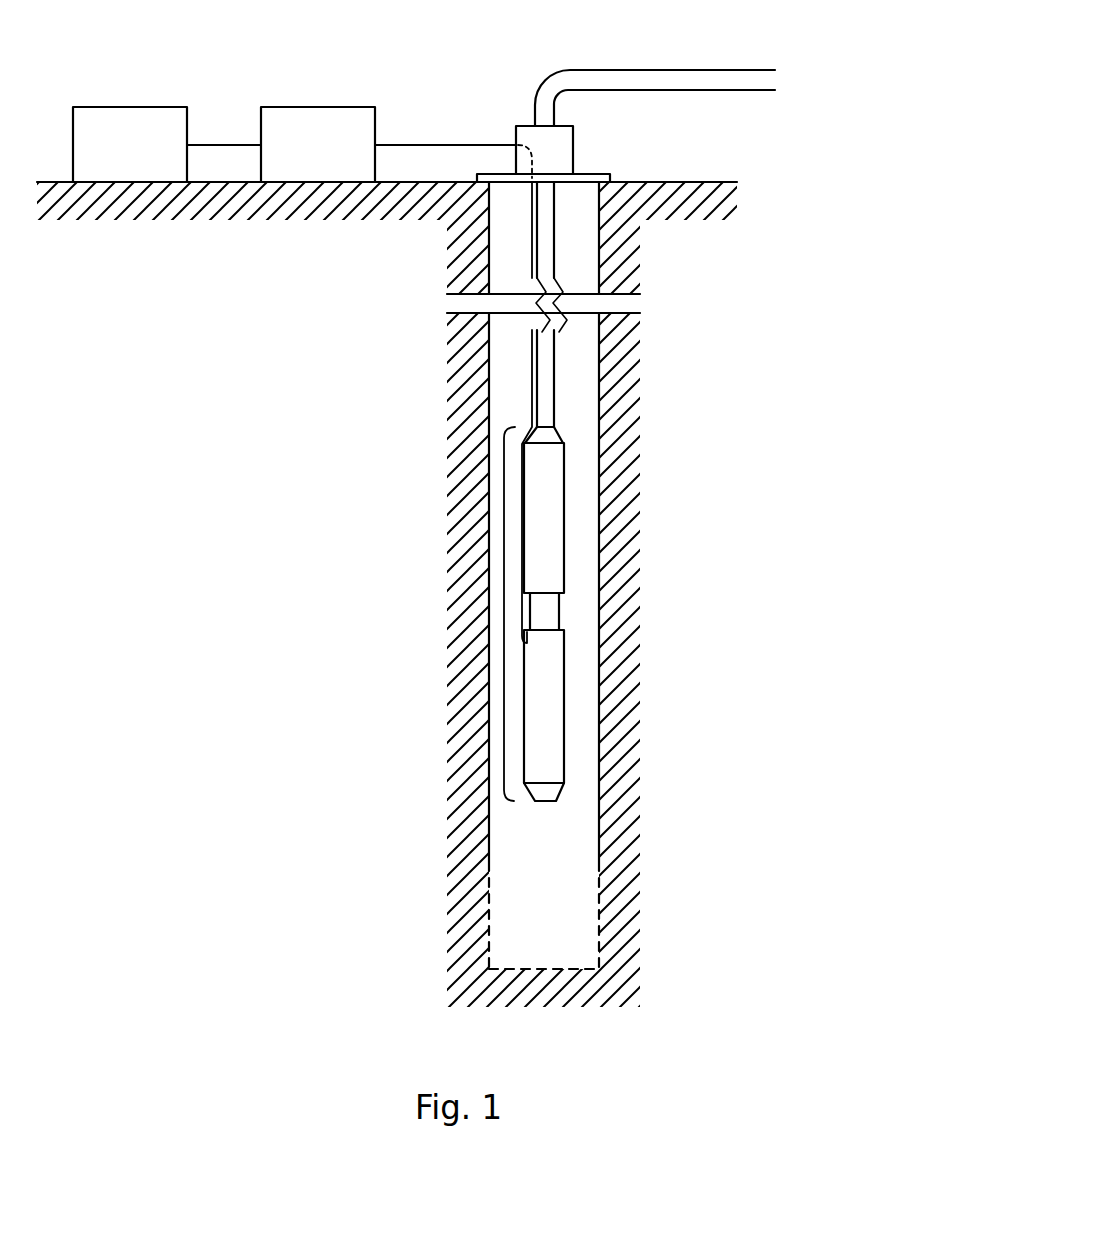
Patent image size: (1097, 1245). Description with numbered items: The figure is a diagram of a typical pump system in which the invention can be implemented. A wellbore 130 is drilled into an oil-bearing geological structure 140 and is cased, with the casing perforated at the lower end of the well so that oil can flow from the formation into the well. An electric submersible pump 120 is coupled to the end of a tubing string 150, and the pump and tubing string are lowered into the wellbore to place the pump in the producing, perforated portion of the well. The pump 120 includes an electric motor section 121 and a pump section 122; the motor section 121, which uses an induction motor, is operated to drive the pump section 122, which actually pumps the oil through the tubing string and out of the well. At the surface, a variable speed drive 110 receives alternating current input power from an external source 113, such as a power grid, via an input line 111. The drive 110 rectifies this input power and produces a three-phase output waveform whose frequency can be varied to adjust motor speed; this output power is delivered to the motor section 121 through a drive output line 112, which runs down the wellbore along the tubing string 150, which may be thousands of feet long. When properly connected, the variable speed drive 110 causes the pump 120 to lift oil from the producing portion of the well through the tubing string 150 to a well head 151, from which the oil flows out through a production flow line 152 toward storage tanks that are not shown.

The variable speed drive 110 is at (335, 107).
The input line 111 is at (229, 145).
The drive output line 112 is at (420, 145).
The external source 113 is at (146, 107).
The electric submersible pump 120 is at (504, 606).
The motor section 121 is at (564, 783).
The pump section 122 is at (563, 463).
The wellbore 130 is at (601, 542).
The oil-bearing geological structure 140 is at (636, 680).
The tubing string 150 is at (555, 377).
The well head 151 is at (574, 141).
The production flow line 152 is at (663, 70).